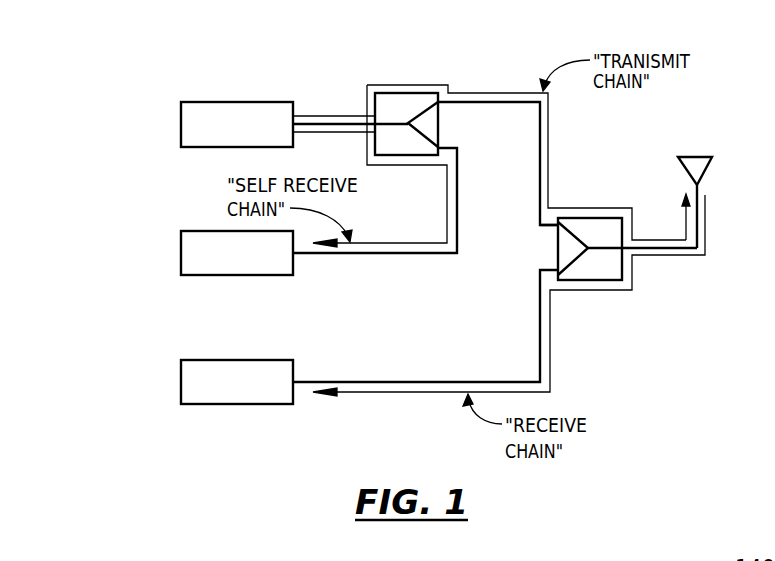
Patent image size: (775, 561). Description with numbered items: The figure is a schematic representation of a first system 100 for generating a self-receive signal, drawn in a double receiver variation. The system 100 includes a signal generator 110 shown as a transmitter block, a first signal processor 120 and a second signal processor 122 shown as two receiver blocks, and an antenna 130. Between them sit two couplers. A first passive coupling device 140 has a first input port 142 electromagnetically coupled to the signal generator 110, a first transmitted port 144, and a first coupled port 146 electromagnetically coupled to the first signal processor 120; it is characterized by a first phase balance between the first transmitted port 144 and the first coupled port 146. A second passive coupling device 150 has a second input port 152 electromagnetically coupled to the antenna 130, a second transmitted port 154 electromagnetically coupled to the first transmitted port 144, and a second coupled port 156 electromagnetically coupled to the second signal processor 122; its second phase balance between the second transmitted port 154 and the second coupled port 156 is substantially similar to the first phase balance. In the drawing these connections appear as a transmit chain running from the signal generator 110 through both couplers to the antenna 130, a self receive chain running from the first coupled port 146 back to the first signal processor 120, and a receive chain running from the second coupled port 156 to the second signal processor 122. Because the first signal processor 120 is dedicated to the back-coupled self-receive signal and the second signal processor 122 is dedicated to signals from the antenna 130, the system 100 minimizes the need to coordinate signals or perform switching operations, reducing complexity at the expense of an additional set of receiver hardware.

The first system 100 is at (203, 62).
The signal generator 110 is at (208, 148).
The first signal processor 120 is at (208, 231).
The second signal processor 122 is at (195, 360).
The antenna 130 is at (692, 156).
The first passive coupling device 140 is at (405, 93).
The first input port 142 is at (377, 124).
The first transmitted port 144 is at (439, 102).
The first coupled port 146 is at (439, 148).
The second passive coupling device 150 is at (597, 212).
The second input port 152 is at (622, 250).
The second transmitted port 154 is at (558, 225).
The second coupled port 156 is at (558, 270).